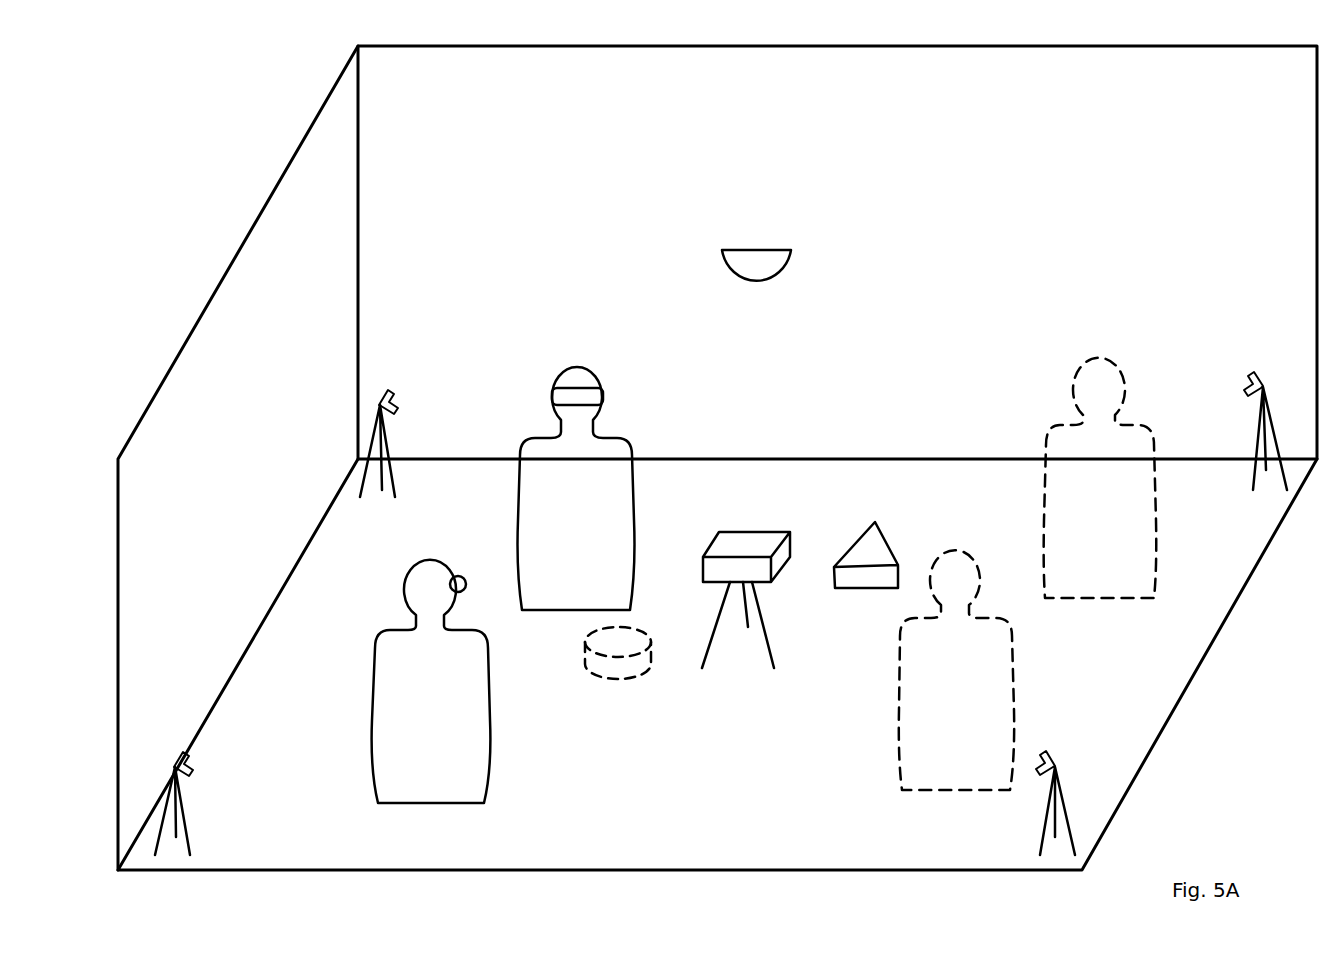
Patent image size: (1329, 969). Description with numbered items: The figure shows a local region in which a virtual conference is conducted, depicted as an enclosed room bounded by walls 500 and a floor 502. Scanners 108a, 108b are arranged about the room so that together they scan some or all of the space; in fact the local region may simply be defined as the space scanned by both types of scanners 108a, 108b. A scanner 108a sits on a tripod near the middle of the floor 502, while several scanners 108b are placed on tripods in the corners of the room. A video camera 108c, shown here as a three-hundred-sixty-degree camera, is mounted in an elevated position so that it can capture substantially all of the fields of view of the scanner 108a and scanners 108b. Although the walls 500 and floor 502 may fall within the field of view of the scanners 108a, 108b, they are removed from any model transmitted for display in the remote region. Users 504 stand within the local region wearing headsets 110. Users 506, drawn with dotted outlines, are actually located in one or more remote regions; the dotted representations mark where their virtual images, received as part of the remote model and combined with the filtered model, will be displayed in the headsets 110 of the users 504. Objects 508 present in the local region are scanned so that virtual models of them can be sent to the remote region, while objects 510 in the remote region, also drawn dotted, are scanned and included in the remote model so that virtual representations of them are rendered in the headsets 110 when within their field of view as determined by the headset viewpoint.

The walls 500 is at (259, 471).
The floor 502 is at (830, 782).
The users 504 is at (594, 497).
The users 506 is at (1118, 489).
The objects 508 is at (860, 546).
The objects 510 is at (623, 683).
The scanner 108a is at (753, 543).
The scanners 108b is at (396, 406).
The video camera 108c is at (755, 250).
The headsets 110 is at (553, 392).